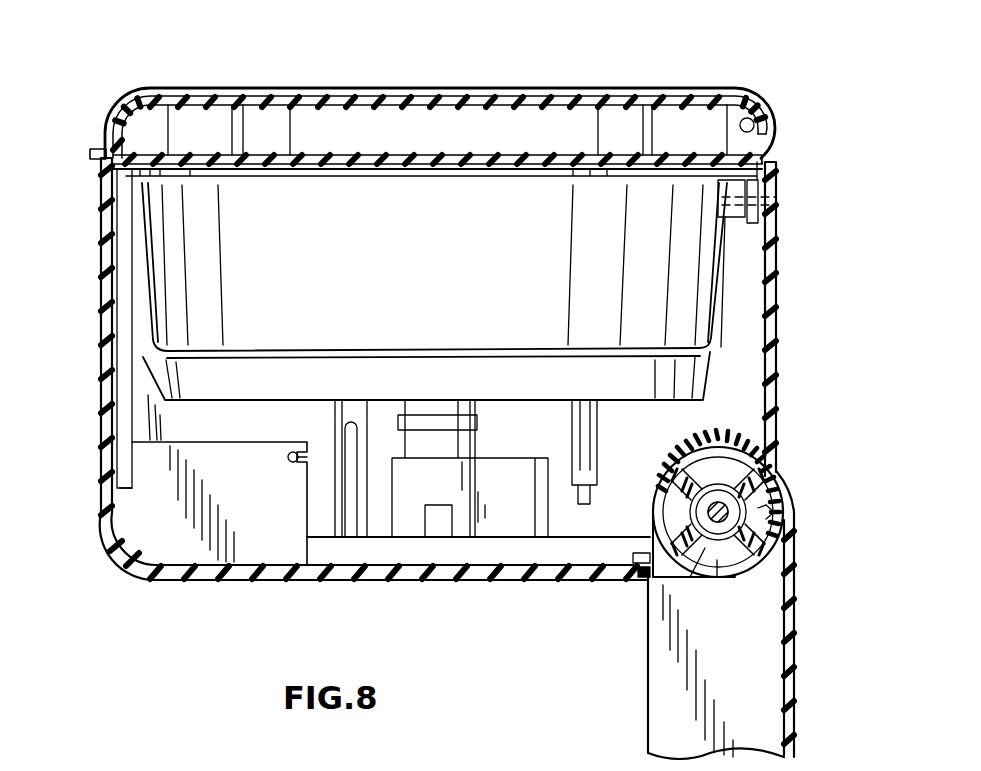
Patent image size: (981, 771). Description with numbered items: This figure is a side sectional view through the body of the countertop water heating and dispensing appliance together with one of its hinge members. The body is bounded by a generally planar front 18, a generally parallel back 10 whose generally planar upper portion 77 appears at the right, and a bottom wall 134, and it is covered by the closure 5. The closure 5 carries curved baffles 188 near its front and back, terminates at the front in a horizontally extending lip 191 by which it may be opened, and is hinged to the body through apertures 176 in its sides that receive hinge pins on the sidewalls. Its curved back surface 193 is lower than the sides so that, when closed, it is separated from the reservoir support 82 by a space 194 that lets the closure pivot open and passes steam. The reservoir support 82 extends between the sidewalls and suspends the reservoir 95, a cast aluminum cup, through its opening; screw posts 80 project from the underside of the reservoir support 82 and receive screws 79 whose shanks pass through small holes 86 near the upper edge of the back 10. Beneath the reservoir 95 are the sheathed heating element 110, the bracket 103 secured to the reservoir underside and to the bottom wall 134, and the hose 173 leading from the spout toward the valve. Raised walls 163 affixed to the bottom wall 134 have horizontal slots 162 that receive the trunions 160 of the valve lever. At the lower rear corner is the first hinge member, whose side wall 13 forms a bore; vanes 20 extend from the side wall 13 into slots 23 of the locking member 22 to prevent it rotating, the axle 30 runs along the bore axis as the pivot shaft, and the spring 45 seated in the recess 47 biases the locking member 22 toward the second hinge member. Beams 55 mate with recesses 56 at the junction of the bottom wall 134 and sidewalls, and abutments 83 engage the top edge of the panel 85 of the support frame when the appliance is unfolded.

The closure 5 is at (566, 88).
The reservoir support 82 is at (509, 155).
The curved baffles 188 is at (223, 140).
The apertures 176 is at (754, 120).
The curved back surface 193 is at (767, 126).
The space 194 is at (771, 147).
The lip 191 is at (90, 148).
The back 10 is at (777, 410).
The front 18 is at (100, 236).
The bottom wall 134 is at (510, 582).
The upper portion 77 is at (777, 304).
The screws 79 is at (766, 199).
The screw posts 80 is at (729, 218).
The reservoir 95 is at (440, 267).
The raised walls 163 is at (180, 532).
The trunions 160 is at (288, 457).
The horizontal slots 162 is at (306, 463).
The bracket 103 is at (338, 432).
The hose 173 is at (452, 446).
The sheathed heating element 110 is at (590, 425).
The small holes 86 is at (732, 447).
The spring 45 is at (694, 500).
The locking member 22 is at (730, 522).
The axle 30 is at (729, 520).
The recess 47 is at (704, 560).
The side wall 13 is at (724, 572).
The vanes 20 is at (774, 512).
The slots 23 is at (772, 516).
The abutments 83 is at (790, 532).
The panel 85 is at (798, 668).
The recesses 56 is at (631, 554).
The beams 55 is at (644, 574).